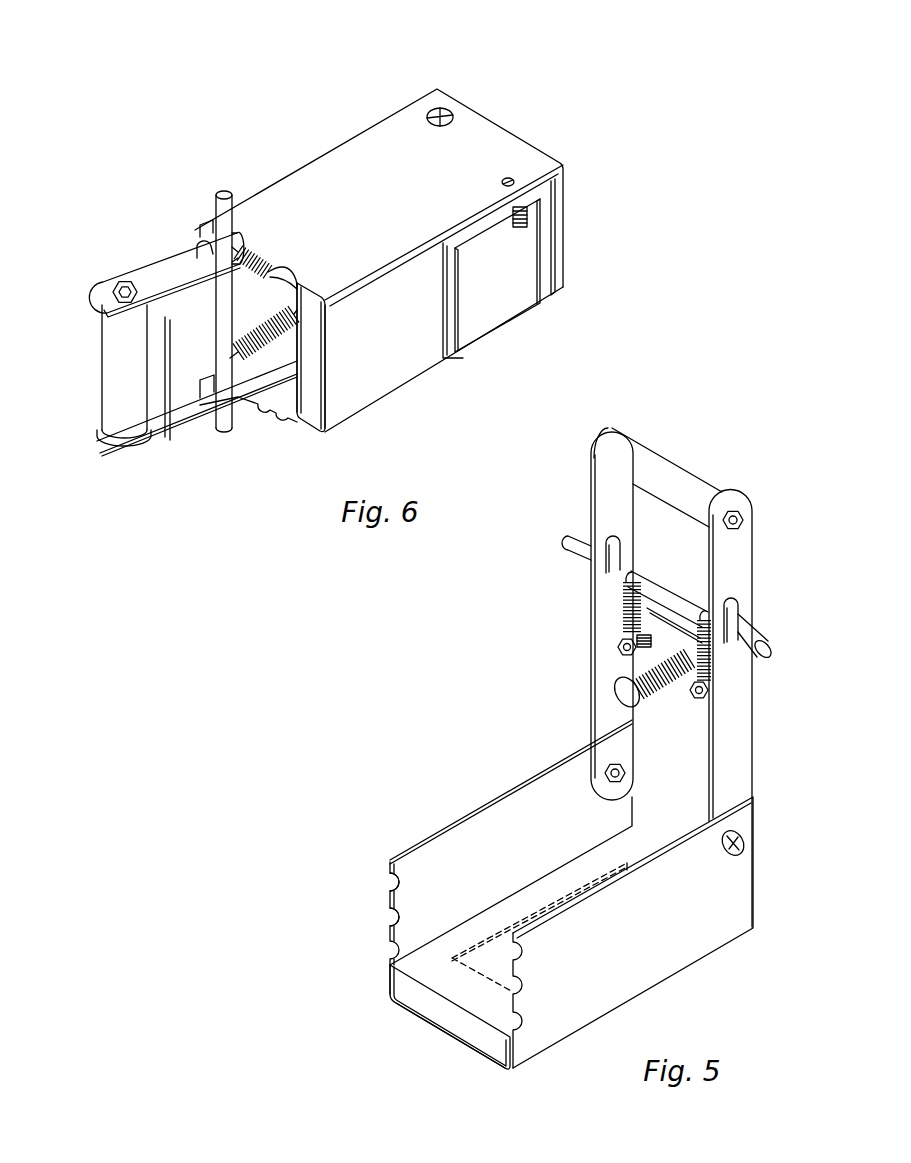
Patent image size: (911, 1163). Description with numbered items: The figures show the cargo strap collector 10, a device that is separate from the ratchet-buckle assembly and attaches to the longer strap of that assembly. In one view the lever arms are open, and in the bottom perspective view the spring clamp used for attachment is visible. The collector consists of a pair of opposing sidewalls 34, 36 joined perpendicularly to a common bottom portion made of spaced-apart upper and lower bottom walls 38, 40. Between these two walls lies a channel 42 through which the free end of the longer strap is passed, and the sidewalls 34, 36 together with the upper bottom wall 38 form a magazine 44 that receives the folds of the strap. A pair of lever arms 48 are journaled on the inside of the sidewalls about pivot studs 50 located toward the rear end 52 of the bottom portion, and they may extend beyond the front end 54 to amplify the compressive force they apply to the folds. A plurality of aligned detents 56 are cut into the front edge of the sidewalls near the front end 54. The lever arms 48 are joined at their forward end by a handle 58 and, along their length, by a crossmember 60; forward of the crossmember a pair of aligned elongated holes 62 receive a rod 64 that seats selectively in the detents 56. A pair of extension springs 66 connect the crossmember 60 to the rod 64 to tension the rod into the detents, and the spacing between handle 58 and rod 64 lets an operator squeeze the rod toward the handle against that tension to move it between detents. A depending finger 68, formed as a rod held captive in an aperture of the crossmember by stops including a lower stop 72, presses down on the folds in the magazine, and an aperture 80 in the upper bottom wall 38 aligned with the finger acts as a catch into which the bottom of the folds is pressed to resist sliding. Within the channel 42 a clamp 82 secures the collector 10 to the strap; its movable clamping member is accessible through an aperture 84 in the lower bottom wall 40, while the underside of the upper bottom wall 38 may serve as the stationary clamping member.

In FIG. 6, the cargo strap collector 10 is at (540, 124).
In FIG. 5, the cargo strap collector 10 is at (767, 810).
In FIG. 6, the sidewall 34 is at (371, 172).
In FIG. 5, the sidewall 34 is at (660, 953).
In FIG. 5, the sidewall 36 is at (500, 817).
In FIG. 6, the upper bottom wall 38 is at (286, 400).
In FIG. 5, the upper bottom wall 38 is at (483, 1033).
In FIG. 6, the lower bottom wall 40 is at (326, 393).
In FIG. 5, the lower bottom wall 40 is at (440, 1037).
In FIG. 6, the channel 42 is at (299, 420).
In FIG. 5, the channel 42 is at (437, 1017).
In FIG. 6, the magazine 44 is at (263, 367).
In FIG. 5, the magazine 44 is at (443, 893).
In FIG. 6, the lever arms 48 is at (160, 437).
In FIG. 5, the lever arms 48 is at (735, 572).
In FIG. 6, the pivot studs 50 is at (441, 107).
In FIG. 5, the pivot studs 50 is at (627, 775).
In FIG. 6, the rear end 52 is at (487, 111).
In FIG. 5, the rear end 52 is at (640, 837).
In FIG. 6, the front end 54 is at (268, 280).
In FIG. 5, the front end 54 is at (390, 940).
In FIG. 6, the detents 56 is at (292, 274).
In FIG. 5, the detents 56 is at (403, 883).
In FIG. 6, the handle 58 is at (117, 350).
In FIG. 5, the handle 58 is at (672, 458).
In FIG. 5, the crossmember 60 is at (660, 650).
In FIG. 6, the elongated holes 62 is at (197, 240).
In FIG. 5, the elongated holes 62 is at (620, 556).
In FIG. 6, the rod 64 is at (227, 193).
In FIG. 5, the rod 64 is at (570, 540).
In FIG. 6, the extension springs 66 is at (214, 290).
In FIG. 5, the extension springs 66 is at (620, 600).
In FIG. 5, the finger 68 is at (667, 693).
In FIG. 5, the lower stop 72 is at (625, 693).
In FIG. 5, the aperture 80 is at (490, 957).
In FIG. 6, the clamp 82 is at (498, 308).
In FIG. 6, the aperture 84 is at (447, 313).